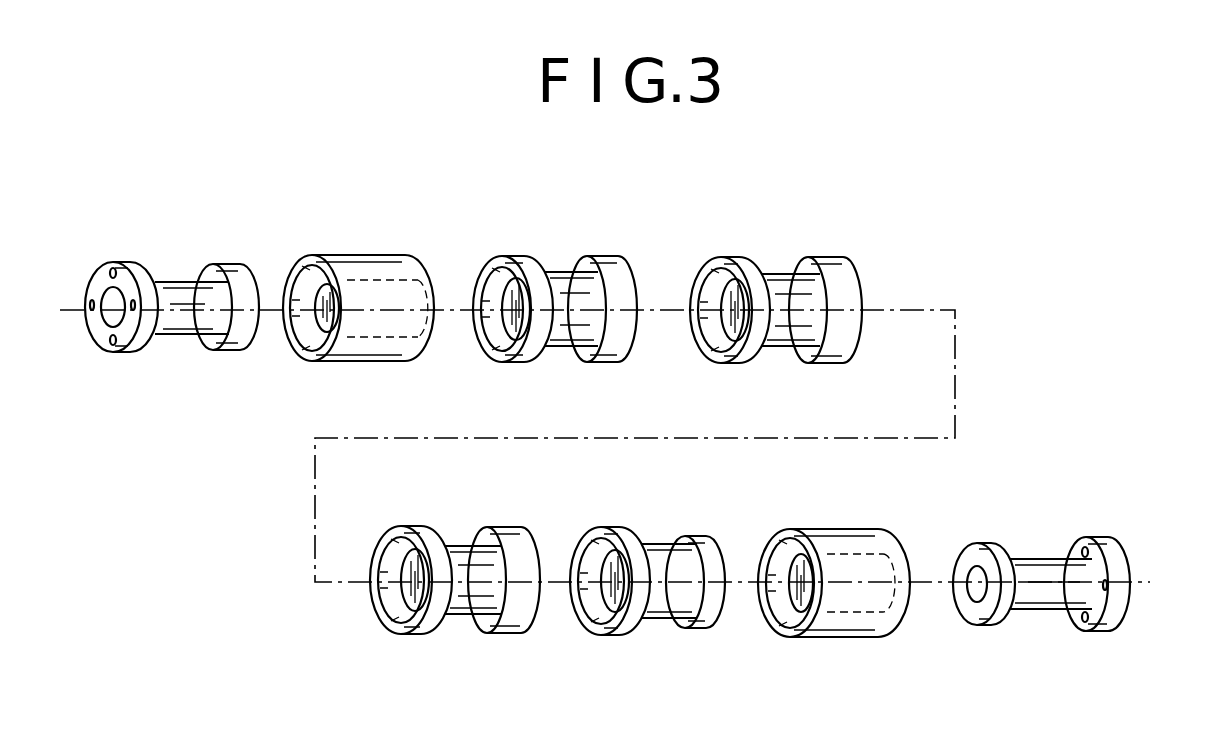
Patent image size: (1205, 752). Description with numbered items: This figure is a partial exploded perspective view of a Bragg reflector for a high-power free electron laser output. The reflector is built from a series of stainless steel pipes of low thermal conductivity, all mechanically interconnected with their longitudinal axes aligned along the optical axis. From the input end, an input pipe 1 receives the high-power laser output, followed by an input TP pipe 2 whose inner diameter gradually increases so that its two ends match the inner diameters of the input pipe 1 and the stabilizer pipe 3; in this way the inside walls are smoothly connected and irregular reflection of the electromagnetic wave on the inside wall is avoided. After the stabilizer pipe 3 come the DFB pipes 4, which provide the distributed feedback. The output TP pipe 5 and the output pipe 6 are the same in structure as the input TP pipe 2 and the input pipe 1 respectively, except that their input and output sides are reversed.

The input pipe 1 is at (178, 283).
The input TP (Taper) pipe 2 is at (371, 257).
The stabilizer pipe 3 is at (559, 272).
The DFB (Distributed Feedback) pipes 4 is at (787, 273).
The output TP pipe 5 is at (847, 622).
The output pipe 6 is at (1050, 602).